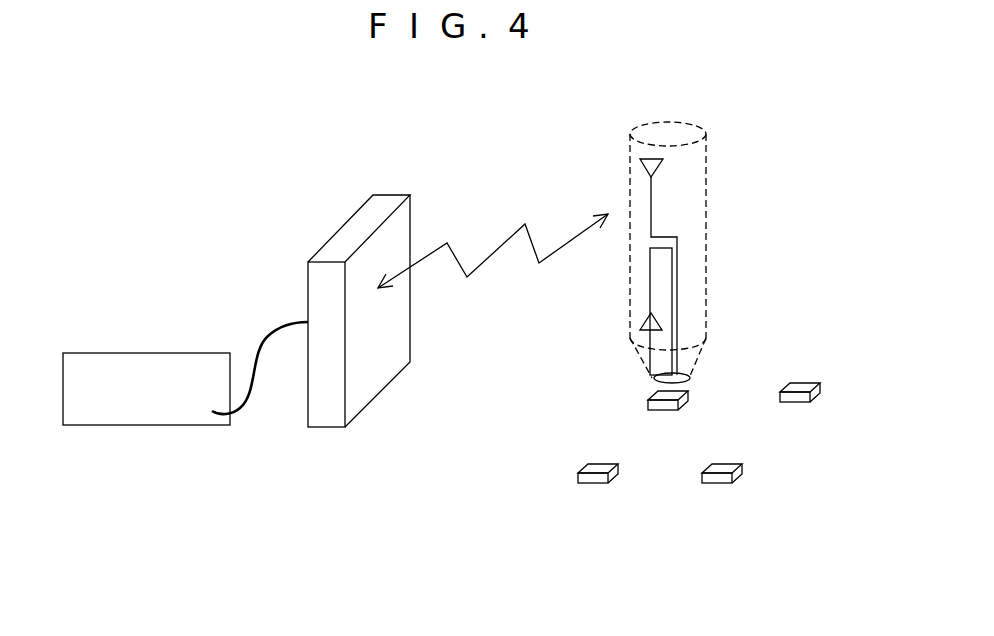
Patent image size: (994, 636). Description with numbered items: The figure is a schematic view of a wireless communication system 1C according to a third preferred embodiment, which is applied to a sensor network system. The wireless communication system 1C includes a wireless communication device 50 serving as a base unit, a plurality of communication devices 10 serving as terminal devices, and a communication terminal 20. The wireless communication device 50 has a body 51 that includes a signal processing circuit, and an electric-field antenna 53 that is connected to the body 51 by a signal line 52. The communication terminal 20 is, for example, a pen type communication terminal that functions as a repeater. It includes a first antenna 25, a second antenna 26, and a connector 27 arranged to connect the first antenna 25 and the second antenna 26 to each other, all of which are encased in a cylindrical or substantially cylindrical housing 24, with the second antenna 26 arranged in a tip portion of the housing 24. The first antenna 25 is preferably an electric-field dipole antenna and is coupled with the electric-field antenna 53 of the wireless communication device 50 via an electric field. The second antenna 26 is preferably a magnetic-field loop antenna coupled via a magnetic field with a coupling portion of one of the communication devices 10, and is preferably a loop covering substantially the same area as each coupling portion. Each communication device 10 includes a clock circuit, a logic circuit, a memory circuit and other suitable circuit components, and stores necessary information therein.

The wireless communication system 1C is at (286, 127).
The communication device 10 is at (688, 395).
The communication terminal 20 is at (681, 252).
The housing 24 is at (706, 169).
The first antenna 25 is at (651, 189).
The second antenna 26 is at (656, 375).
The connector 27 is at (677, 273).
The wireless communication device 50 is at (253, 336).
The body 51 is at (103, 353).
The signal line 52 is at (253, 414).
The electric-field antenna 53 is at (410, 213).